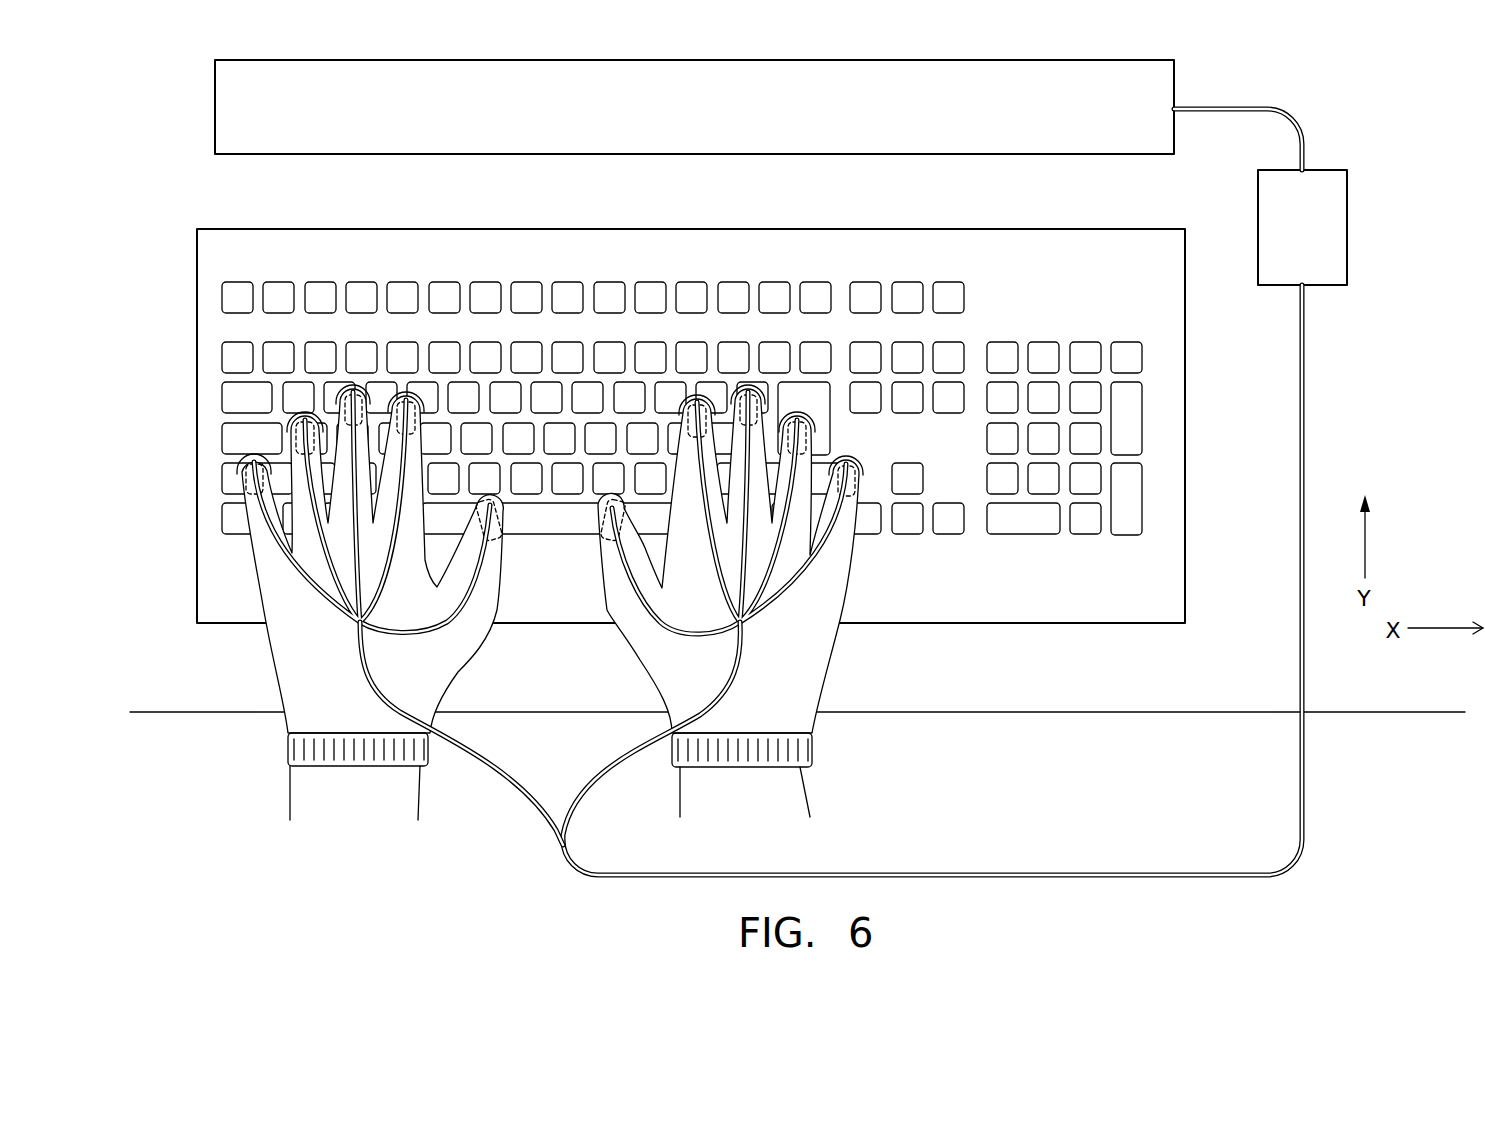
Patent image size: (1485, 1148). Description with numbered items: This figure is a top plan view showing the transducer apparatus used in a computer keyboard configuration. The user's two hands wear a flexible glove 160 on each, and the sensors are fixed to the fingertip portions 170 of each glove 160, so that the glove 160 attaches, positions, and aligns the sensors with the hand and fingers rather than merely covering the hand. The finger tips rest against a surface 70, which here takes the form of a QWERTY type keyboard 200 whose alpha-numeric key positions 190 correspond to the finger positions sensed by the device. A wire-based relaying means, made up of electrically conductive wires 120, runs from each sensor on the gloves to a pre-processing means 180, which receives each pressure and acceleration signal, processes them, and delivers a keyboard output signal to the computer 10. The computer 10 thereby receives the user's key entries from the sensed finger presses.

The computer 10 is at (477, 154).
The surface 70 is at (683, 464).
The electrically conductive wires 120 is at (962, 872).
The glove 160 is at (458, 660).
The fingertip portions 170 is at (600, 483).
The pre-processing means 180 is at (1347, 210).
The key positions 190 is at (1085, 347).
The keyboard 200 is at (232, 610).